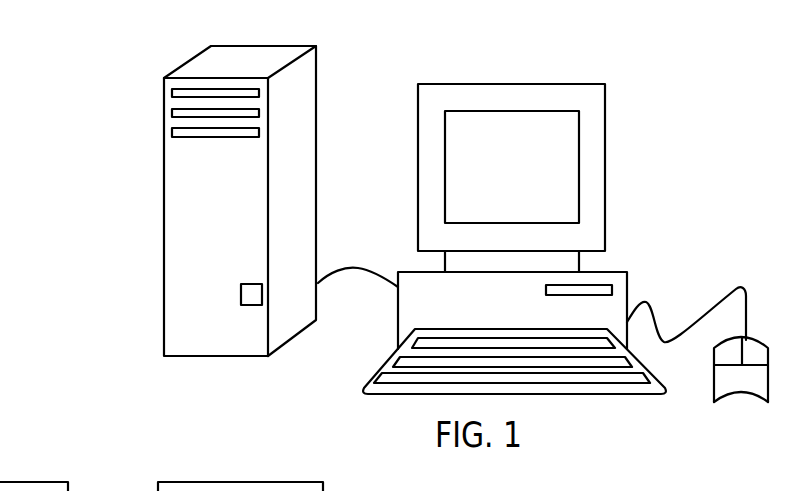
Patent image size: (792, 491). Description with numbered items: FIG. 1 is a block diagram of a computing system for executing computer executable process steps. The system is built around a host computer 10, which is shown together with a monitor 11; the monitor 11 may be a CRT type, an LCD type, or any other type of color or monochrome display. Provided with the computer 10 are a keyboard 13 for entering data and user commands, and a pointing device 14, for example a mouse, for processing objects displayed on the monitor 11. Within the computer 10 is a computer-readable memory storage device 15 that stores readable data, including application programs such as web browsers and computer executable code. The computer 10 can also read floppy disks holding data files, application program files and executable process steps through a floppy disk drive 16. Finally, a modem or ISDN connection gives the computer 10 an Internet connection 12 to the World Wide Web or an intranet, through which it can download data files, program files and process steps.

The host computer 10 is at (396, 258).
The monitor 11 is at (572, 180).
The Internet connection 12 is at (204, 231).
The keyboard 13 is at (360, 392).
The pointing device 14 is at (741, 388).
The computer-readable memory storage device 15 is at (172, 98).
The floppy disk drive 16 is at (172, 139).